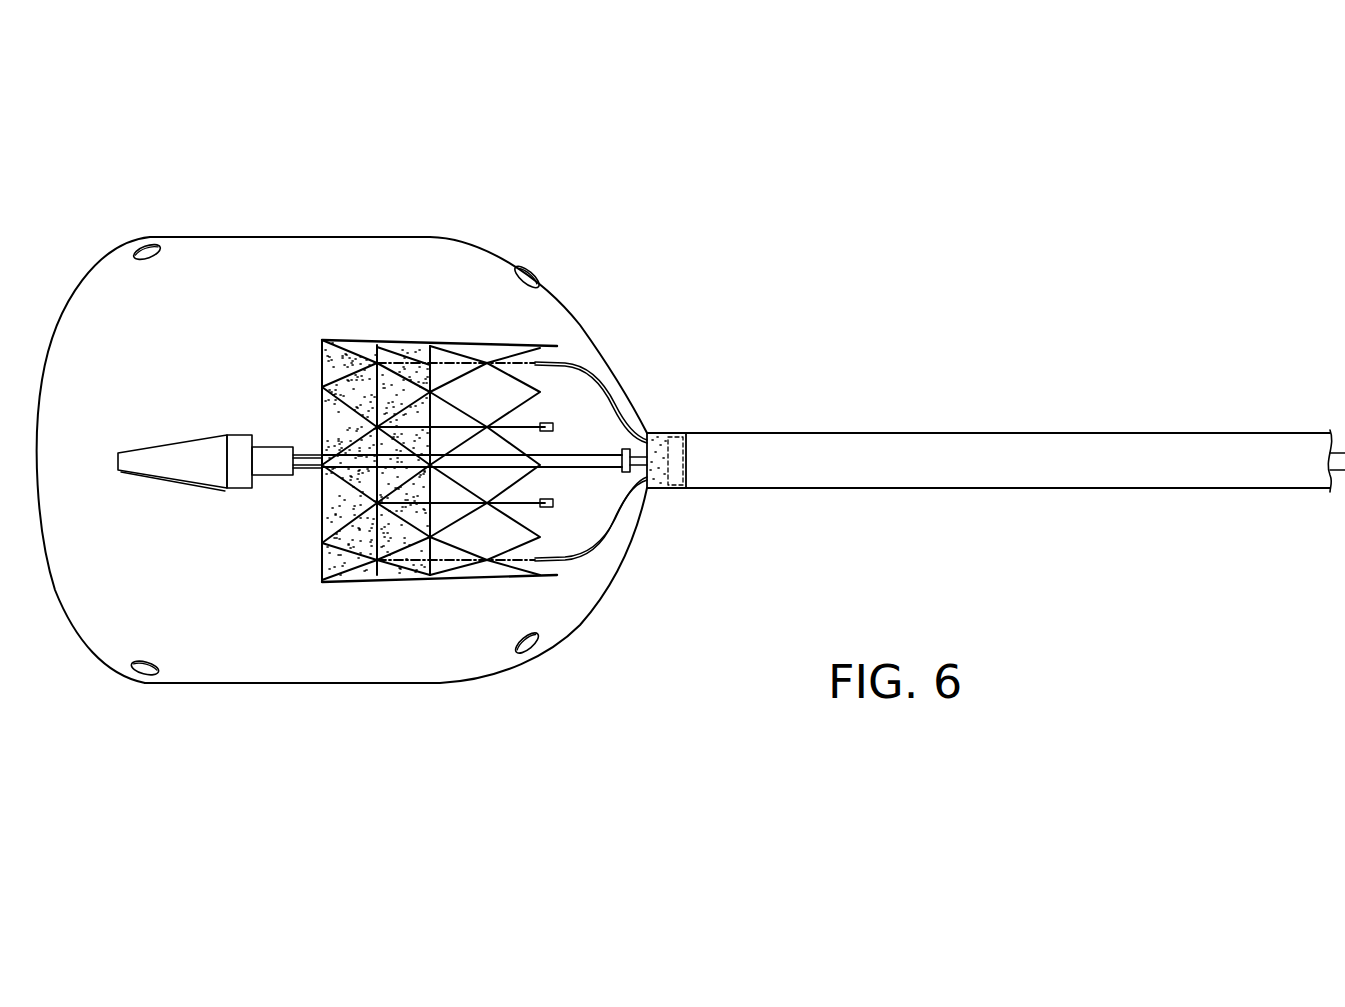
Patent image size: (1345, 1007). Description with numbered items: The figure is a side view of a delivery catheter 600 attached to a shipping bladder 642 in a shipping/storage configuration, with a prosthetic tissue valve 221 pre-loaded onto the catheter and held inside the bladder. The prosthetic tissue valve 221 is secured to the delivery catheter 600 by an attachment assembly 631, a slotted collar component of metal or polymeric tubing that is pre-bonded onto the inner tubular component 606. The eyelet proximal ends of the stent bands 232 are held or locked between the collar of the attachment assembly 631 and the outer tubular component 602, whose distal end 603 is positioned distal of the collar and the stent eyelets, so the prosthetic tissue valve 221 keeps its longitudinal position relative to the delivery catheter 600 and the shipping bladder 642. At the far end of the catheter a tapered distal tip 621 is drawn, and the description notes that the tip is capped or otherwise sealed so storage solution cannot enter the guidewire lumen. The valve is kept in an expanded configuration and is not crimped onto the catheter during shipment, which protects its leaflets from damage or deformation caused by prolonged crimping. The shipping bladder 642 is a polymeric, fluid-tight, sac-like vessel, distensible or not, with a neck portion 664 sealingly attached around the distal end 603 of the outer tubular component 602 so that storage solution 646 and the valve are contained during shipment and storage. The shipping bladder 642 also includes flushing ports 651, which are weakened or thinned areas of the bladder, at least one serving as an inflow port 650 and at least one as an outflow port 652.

The delivery catheter 600 is at (938, 283).
The outer tubular component 602 is at (860, 433).
The distal end of outer tubular component 603 is at (674, 432).
The inner tubular component 606 is at (302, 474).
The nose cone tip 621 is at (186, 436).
The attachment assembly 631 is at (683, 489).
The shipping bladder 642 is at (412, 684).
The storage solution 646 is at (250, 300).
The inflow port 650 is at (530, 268).
The flushing ports 651 is at (144, 246).
The outflow port 652 is at (145, 680).
The neck portion 664 is at (660, 432).
The prosthetic tissue valve 221 is at (397, 577).
The stent bands 232 is at (600, 538).